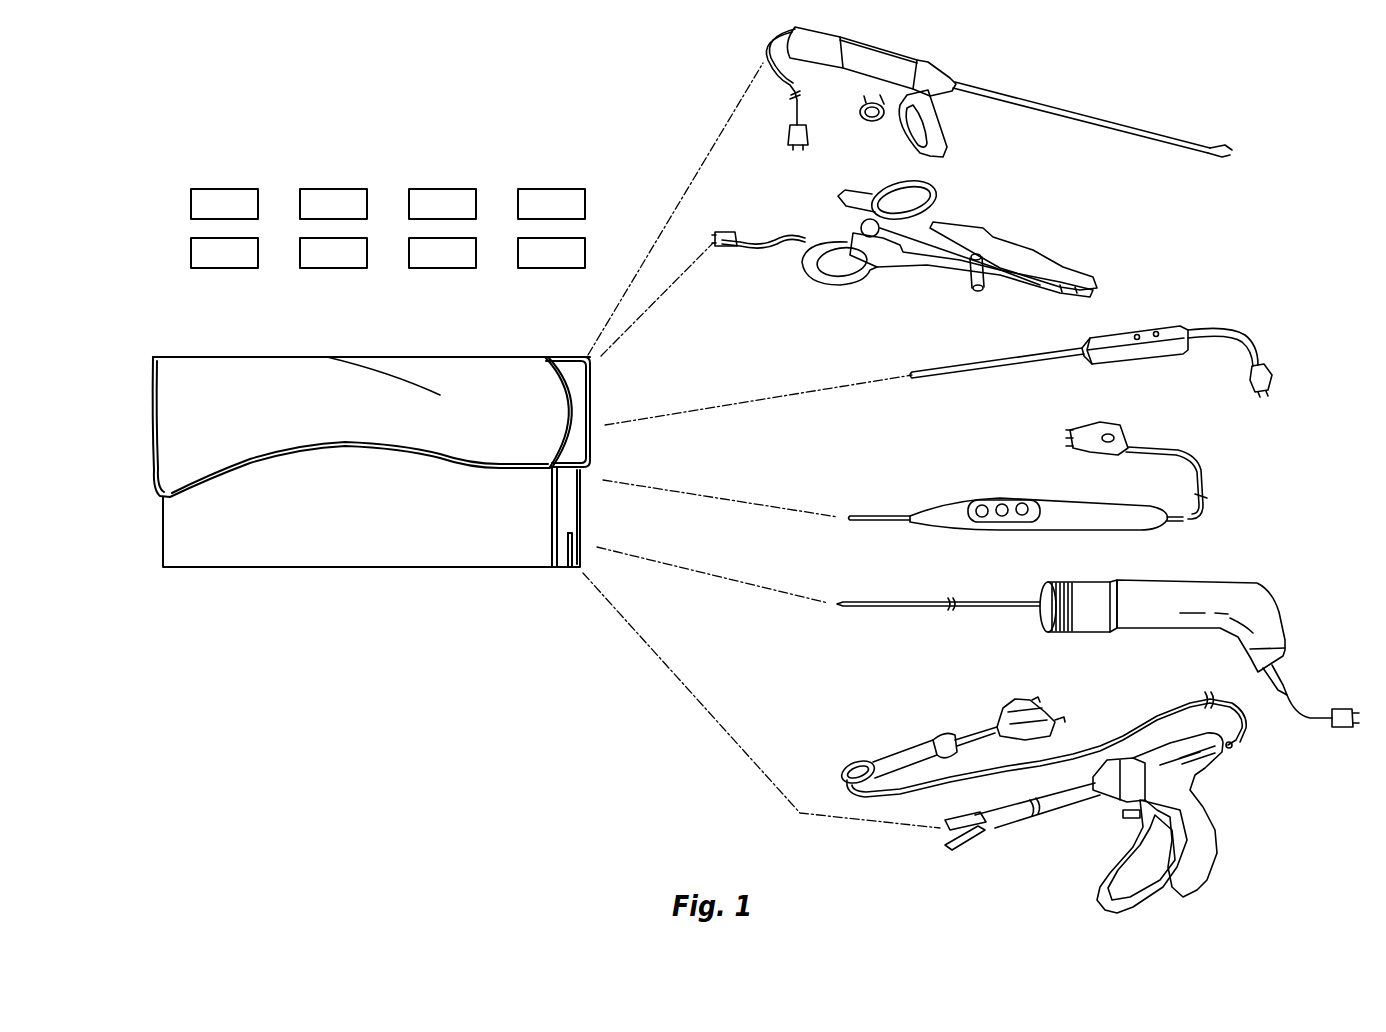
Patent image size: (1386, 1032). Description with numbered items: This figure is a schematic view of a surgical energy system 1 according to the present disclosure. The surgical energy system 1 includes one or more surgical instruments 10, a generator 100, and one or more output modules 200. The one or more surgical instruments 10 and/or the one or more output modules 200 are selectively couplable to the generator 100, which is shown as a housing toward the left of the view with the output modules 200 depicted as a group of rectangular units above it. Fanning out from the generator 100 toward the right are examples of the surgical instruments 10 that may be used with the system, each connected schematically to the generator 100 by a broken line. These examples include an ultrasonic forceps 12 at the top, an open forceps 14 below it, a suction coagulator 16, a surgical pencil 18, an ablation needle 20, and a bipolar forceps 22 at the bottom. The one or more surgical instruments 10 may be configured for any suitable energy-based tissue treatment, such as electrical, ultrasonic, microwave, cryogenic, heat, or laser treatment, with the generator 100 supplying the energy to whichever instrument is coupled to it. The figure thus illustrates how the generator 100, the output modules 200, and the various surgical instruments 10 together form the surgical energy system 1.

The surgical energy system 1 is at (390, 142).
The surgical instruments 10 is at (695, 761).
The ultrasonic forceps 12 is at (1033, 98).
The open forceps 14 is at (986, 228).
The suction coagulator 16 is at (1148, 328).
The surgical pencil 18 is at (928, 508).
The ablation needle 20 is at (1268, 590).
The bipolar forceps 22 is at (1214, 822).
The generator 100 is at (331, 555).
The output modules 200 is at (237, 185).